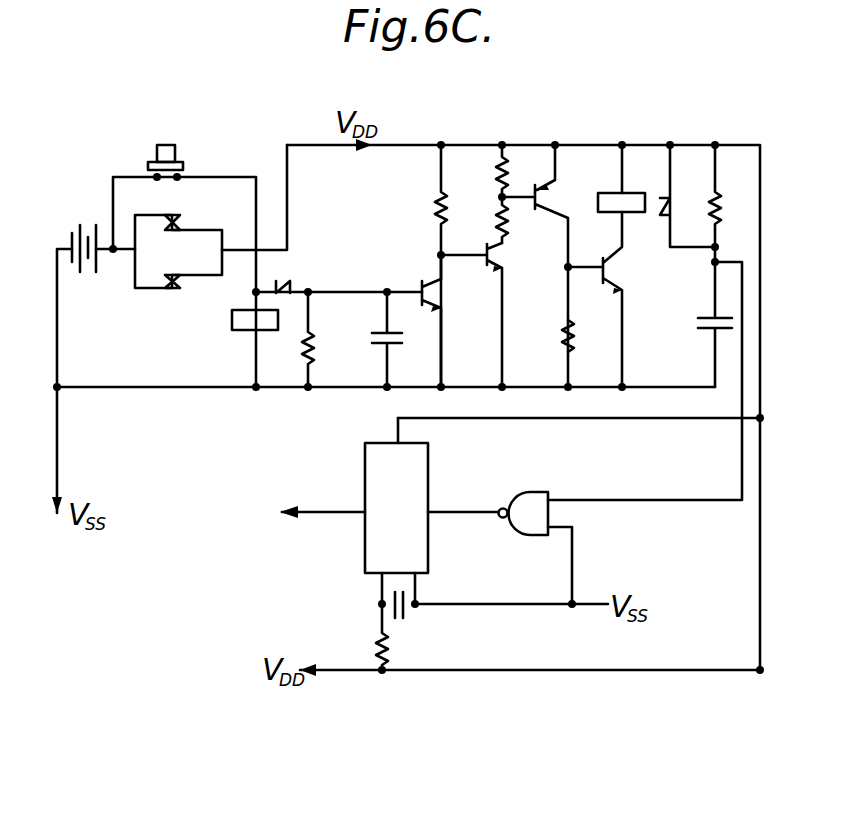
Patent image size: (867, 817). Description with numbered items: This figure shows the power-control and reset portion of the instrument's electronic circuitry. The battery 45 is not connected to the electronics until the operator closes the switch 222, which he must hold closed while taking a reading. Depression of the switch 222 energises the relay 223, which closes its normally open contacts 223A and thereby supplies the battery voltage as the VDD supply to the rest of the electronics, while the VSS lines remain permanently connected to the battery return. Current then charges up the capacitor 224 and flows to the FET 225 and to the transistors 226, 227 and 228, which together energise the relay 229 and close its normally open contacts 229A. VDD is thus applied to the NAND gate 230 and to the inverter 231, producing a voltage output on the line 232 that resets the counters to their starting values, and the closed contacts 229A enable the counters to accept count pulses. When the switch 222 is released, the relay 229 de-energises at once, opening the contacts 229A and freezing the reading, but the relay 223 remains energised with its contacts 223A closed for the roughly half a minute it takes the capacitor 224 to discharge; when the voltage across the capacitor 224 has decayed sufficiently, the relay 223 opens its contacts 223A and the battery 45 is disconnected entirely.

The battery 45 is at (76, 228).
The switch 222 is at (170, 150).
The normally open contacts of relay 223 223A is at (172, 284).
The normally open contacts of relay 229 229A is at (180, 222).
The relay 223 is at (236, 318).
The capacitor 224 is at (380, 346).
The FET 225 is at (418, 284).
The transistor 226 is at (487, 258).
The transistor 227 is at (535, 205).
The transistor 228 is at (612, 278).
The relay 229 is at (610, 196).
The NAND gate 230 is at (535, 500).
The inverter 231 is at (368, 469).
The line 232 is at (333, 516).